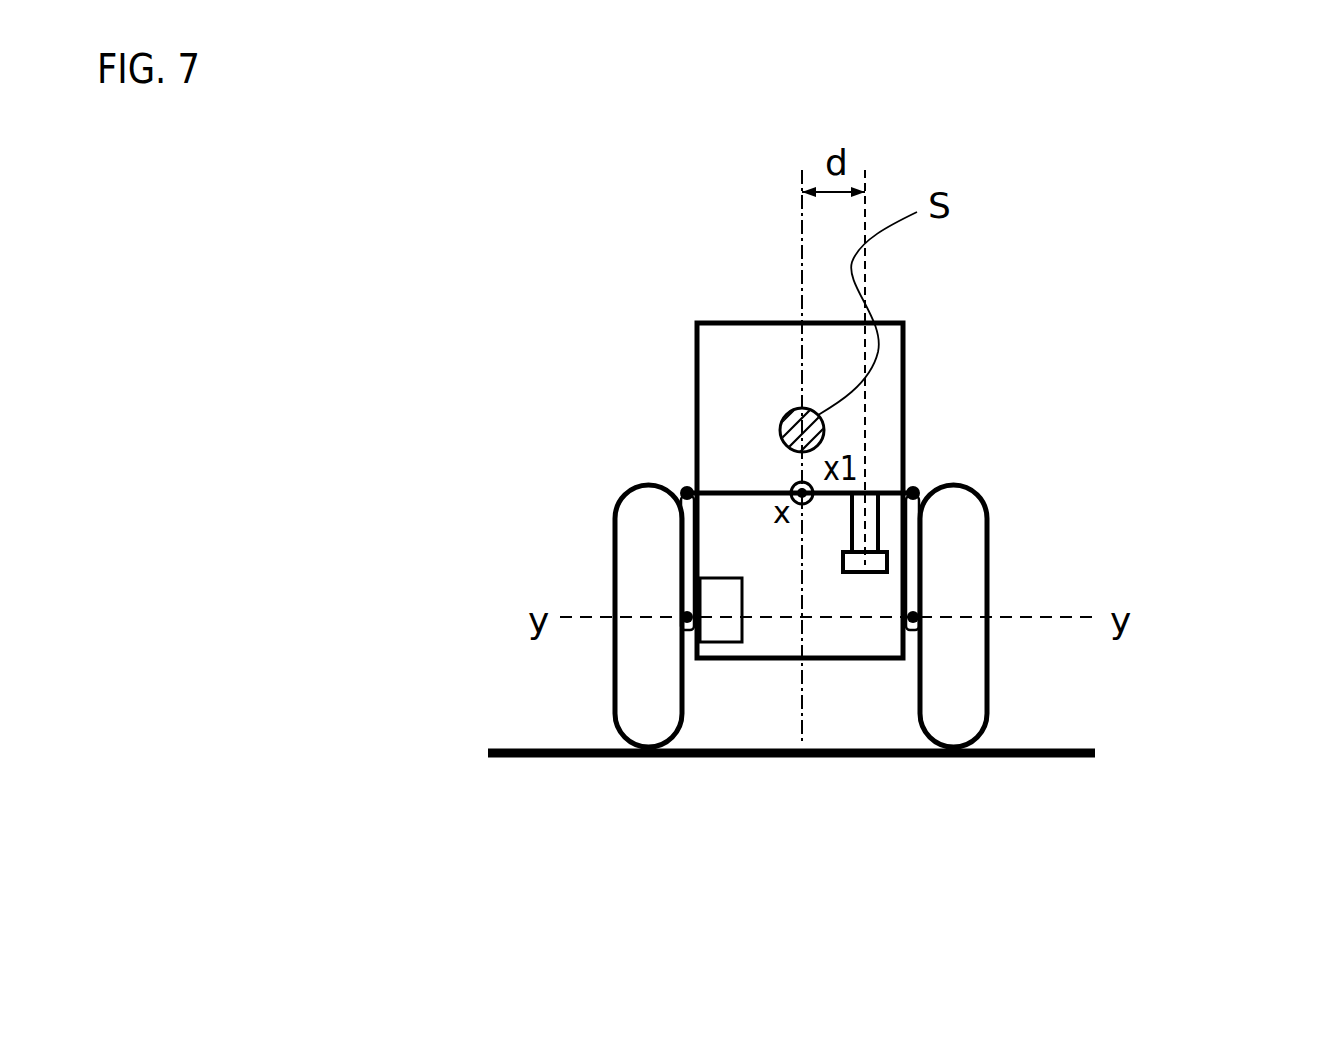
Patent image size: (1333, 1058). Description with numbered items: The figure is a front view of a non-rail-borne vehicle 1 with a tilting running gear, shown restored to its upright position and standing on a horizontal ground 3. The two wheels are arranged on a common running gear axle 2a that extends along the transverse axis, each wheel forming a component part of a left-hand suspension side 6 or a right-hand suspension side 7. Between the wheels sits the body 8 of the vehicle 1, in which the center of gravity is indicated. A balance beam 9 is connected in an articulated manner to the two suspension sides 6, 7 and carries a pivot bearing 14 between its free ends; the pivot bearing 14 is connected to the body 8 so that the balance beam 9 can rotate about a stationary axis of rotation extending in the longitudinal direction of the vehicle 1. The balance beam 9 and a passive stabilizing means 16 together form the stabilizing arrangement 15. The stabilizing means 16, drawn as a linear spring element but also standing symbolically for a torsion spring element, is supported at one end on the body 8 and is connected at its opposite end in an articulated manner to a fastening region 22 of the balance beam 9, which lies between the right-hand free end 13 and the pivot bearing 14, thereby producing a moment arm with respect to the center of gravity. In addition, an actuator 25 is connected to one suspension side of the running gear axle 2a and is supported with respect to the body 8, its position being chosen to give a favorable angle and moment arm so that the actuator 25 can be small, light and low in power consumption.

The vehicle 1 is at (1170, 330).
The running gear axle 2a is at (688, 628).
The ground 3 is at (550, 812).
The suspension side 6 is at (447, 595).
The suspension side 7 is at (1182, 587).
The body 8 is at (743, 322).
The balance beam 9 is at (753, 492).
The free end 13 is at (933, 477).
The pivot bearing 14 is at (804, 504).
The stabilizing arrangement 15 is at (922, 457).
The stabilizing means 16 is at (868, 572).
The fastening region 22 is at (878, 478).
The actuator 25 is at (720, 643).